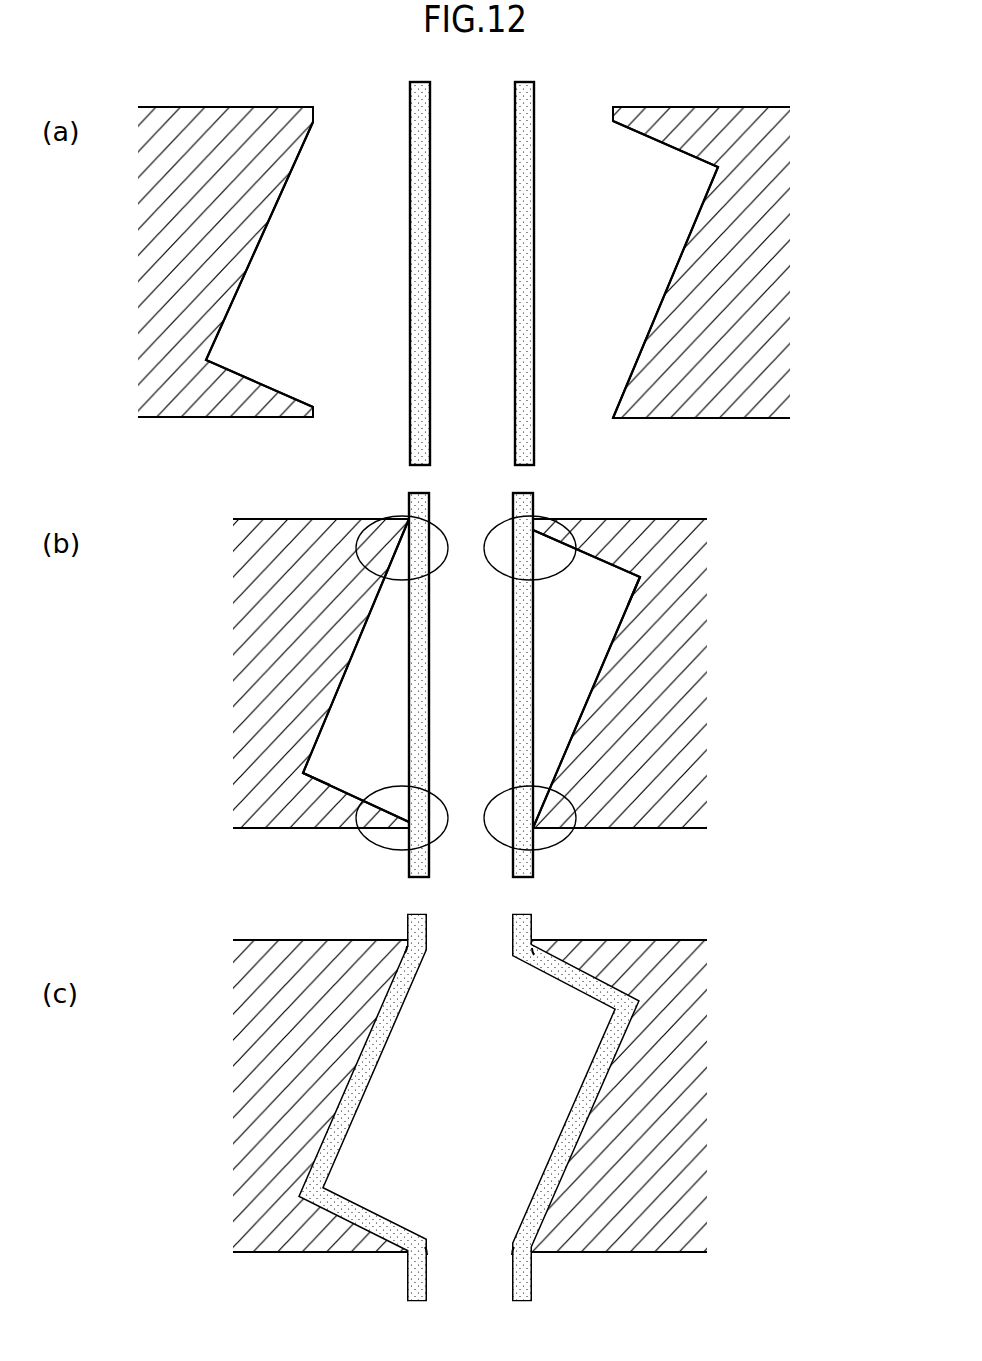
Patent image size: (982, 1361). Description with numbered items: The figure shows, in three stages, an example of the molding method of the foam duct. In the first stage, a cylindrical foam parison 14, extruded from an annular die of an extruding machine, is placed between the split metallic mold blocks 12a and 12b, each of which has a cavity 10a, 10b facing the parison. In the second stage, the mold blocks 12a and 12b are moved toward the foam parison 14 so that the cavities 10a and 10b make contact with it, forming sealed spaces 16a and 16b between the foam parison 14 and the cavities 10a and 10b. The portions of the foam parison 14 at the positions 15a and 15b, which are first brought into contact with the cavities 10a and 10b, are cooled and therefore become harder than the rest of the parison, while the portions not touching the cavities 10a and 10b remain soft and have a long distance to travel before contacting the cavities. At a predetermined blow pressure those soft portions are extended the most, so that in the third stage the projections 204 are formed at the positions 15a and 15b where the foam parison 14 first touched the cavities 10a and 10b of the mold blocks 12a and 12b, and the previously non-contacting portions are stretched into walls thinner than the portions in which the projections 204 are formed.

The cavity 10a is at (297, 168).
The cavity 10b is at (667, 150).
The split metallic mold block 12a is at (138, 253).
The split metallic mold block 12b is at (780, 233).
The foam parison 14 is at (410, 438).
The position first brought into contact 15a is at (397, 516).
The position first brought into contact 15b is at (547, 514).
The sealed space 16a is at (335, 753).
The sealed space 16b is at (613, 607).
The projection 204 is at (419, 948).